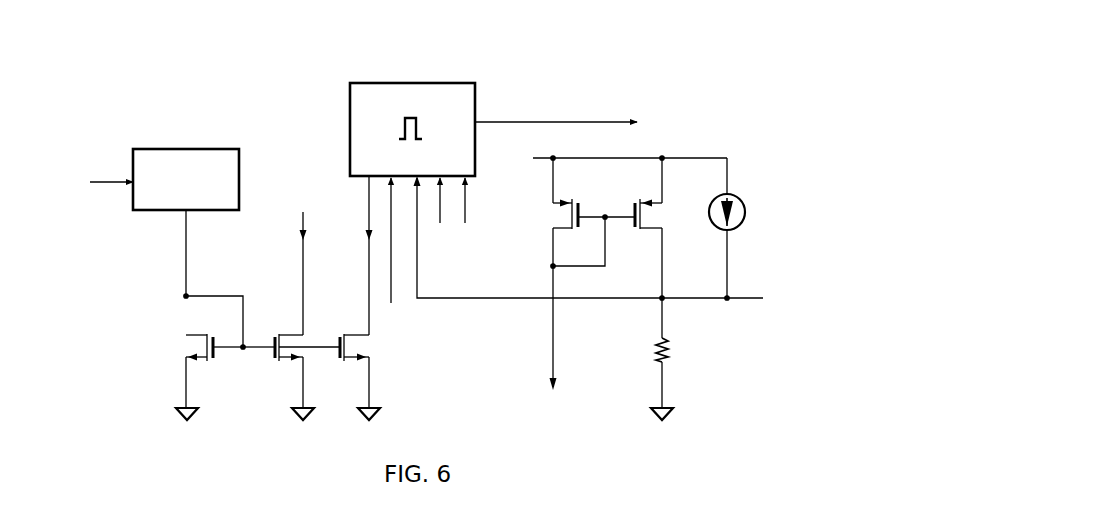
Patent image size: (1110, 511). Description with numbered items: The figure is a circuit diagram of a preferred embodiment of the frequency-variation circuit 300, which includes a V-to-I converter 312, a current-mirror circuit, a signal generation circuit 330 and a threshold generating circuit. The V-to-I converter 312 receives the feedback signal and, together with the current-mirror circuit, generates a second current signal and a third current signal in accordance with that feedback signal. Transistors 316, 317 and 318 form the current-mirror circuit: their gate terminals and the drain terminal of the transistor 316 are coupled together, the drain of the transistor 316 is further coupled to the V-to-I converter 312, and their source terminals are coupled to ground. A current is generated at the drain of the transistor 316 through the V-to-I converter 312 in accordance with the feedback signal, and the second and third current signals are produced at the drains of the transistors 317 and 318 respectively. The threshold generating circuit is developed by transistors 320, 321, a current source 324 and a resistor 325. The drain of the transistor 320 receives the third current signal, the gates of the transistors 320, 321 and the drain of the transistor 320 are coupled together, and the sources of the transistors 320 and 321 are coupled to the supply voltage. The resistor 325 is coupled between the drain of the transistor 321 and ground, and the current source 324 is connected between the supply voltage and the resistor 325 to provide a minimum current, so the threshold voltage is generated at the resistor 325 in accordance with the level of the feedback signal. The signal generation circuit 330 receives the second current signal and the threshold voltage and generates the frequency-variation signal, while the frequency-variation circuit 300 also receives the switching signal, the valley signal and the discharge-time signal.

The frequency-variation circuit 300 is at (772, 51).
The V-to-I converter 312 is at (186, 165).
The transistor 316 is at (214, 336).
The transistor 317 is at (283, 336).
The transistor 318 is at (350, 336).
The transistor 320 is at (548, 214).
The transistor 321 is at (668, 214).
The current source 324 is at (748, 212).
The resistor 325 is at (680, 350).
The signal generation circuit 330 is at (412, 116).